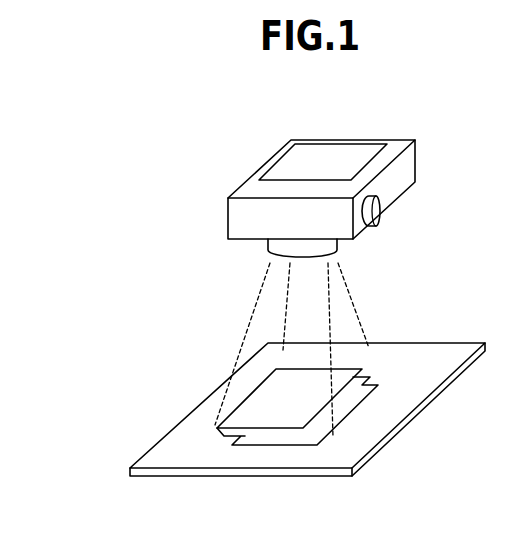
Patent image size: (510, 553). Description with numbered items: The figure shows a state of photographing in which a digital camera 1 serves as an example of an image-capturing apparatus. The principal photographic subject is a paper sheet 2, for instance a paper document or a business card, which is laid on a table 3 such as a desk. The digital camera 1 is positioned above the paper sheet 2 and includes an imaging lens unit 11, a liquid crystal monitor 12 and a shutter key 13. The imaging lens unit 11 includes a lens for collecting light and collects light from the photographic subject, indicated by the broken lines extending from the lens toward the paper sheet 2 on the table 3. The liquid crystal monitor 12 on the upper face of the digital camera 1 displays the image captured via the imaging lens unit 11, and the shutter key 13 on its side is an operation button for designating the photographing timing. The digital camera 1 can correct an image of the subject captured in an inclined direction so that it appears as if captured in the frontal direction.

The digital camera 1 is at (407, 162).
The imaging lens unit 11 is at (333, 246).
The liquid crystal monitor 12 is at (264, 172).
The shutter key 13 is at (373, 208).
The paper sheet 2 is at (380, 372).
The table 3 is at (432, 353).